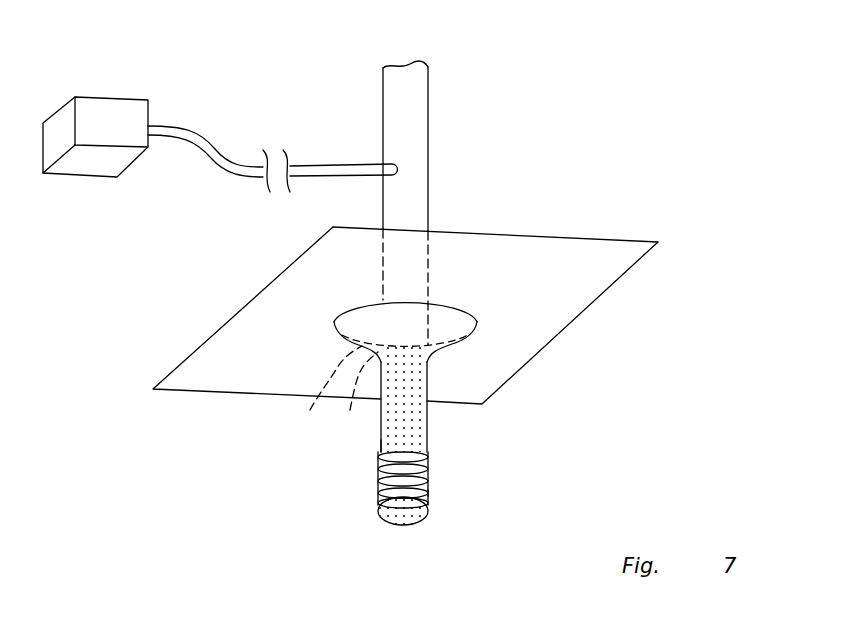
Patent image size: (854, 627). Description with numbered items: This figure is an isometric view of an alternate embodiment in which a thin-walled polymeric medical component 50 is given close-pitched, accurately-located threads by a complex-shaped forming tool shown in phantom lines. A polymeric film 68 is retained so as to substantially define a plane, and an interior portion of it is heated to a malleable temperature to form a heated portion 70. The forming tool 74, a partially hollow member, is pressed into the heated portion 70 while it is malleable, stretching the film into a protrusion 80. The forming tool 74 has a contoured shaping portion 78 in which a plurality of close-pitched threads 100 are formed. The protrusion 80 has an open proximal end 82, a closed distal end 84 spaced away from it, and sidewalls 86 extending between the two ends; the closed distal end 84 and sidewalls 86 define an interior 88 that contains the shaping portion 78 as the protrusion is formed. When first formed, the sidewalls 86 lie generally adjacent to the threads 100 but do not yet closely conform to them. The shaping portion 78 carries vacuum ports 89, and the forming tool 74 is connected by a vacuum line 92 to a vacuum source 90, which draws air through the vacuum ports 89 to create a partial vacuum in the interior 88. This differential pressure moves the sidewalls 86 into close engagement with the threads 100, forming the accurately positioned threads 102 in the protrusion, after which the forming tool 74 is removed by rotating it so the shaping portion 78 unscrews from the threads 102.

The thin-walled polymeric medical component 50 is at (439, 440).
The polymeric film 68 is at (603, 258).
The heated portion 70 is at (447, 296).
The forming tool 74 is at (415, 150).
The shaping portion 78 is at (427, 453).
The protrusion 80 is at (428, 366).
The open proximal end 82 is at (329, 392).
The closed distal end 84 is at (400, 525).
The sidewalls 86 is at (380, 447).
The interior 88 is at (357, 395).
The vacuum ports 89 is at (410, 413).
The vacuum source 90 is at (90, 97).
The vacuum line 92 is at (313, 163).
The close-pitched threads 100 is at (427, 482).
The threads 102 is at (428, 493).